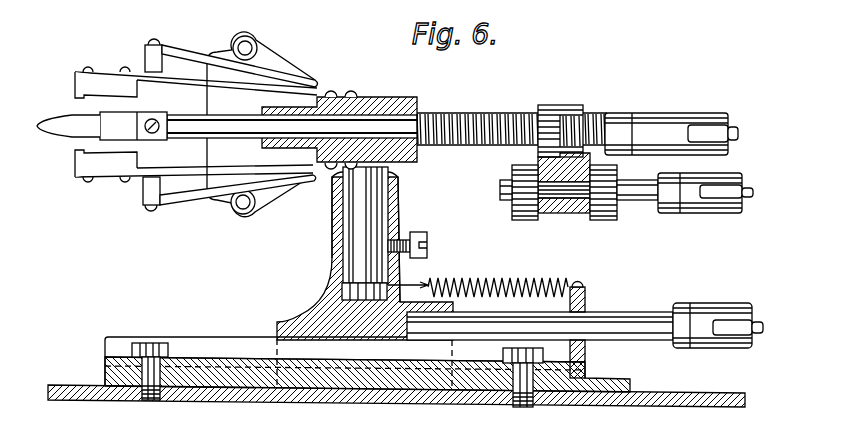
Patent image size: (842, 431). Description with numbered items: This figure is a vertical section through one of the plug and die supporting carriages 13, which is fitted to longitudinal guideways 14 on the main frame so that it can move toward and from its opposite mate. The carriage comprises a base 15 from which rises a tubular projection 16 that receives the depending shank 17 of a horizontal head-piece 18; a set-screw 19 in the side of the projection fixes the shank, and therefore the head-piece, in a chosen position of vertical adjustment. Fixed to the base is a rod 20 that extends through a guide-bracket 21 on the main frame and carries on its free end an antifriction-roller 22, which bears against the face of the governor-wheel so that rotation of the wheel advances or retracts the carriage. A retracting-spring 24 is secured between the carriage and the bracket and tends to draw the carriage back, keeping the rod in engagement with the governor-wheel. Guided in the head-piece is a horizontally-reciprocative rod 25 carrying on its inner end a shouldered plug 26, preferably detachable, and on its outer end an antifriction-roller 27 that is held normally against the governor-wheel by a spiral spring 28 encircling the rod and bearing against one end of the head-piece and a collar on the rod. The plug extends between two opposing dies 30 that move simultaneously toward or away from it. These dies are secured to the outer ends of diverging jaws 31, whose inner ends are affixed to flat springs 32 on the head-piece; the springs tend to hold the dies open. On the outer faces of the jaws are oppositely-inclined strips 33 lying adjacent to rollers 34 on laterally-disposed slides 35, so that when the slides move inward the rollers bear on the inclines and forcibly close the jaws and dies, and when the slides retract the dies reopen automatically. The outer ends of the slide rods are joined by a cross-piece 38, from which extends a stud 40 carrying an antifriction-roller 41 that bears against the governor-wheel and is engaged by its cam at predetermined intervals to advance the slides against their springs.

The plug and die supporting carriage 13 is at (432, 181).
The longitudinal guideways 14 is at (198, 348).
The base 15 is at (330, 323).
The tubular projection 16 is at (332, 248).
The depending shank 17 is at (358, 225).
The horizontal head-piece 18 is at (385, 100).
The set-screw 19 is at (427, 236).
The rod 20 is at (627, 318).
The guide-bracket 21 is at (584, 347).
The antifriction-roller 22 is at (760, 335).
The retracting-spring 24 is at (528, 282).
The horizontally-reciprocative rod 25 is at (227, 122).
The shouldered plug 26 is at (63, 125).
The antifriction-roller 27 is at (738, 132).
The spiral spring 28 is at (480, 113).
The dies 30 is at (82, 86).
The diverging jaws 31 is at (107, 72).
The flat springs 32 is at (340, 90).
The oppositely-inclined strips 33 is at (185, 52).
The rollers 34 is at (257, 46).
The slides 35 is at (280, 68).
The cross-piece 38 is at (538, 155).
The stud 40 is at (643, 200).
The antifriction-roller 41 is at (748, 198).